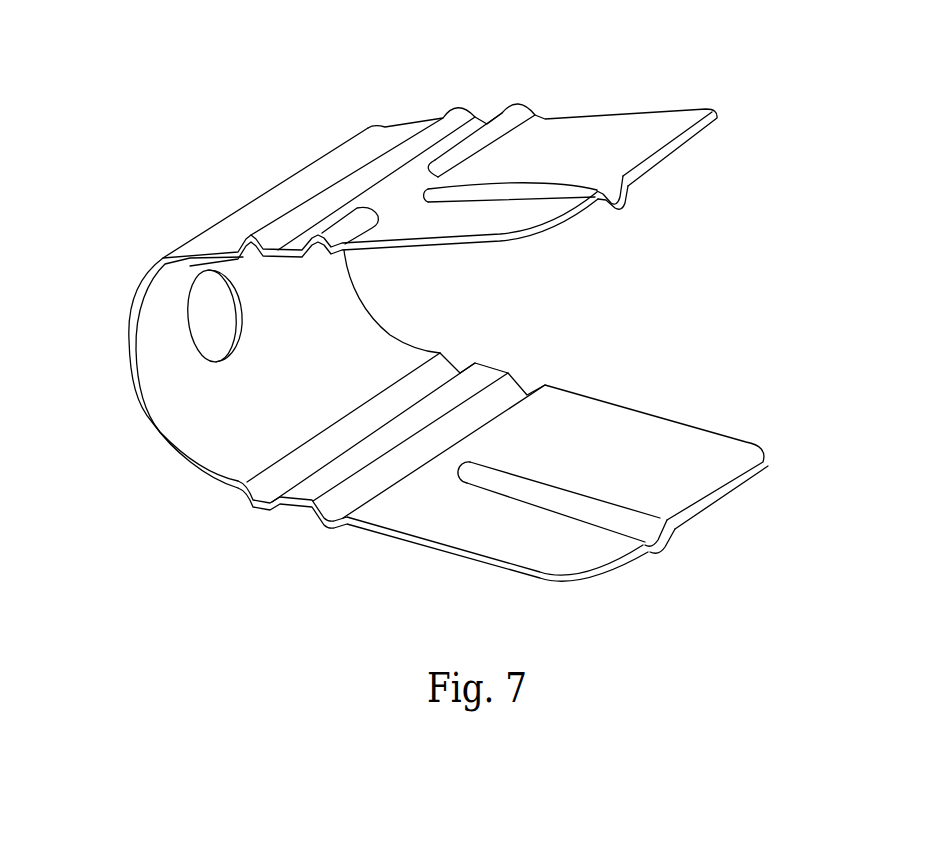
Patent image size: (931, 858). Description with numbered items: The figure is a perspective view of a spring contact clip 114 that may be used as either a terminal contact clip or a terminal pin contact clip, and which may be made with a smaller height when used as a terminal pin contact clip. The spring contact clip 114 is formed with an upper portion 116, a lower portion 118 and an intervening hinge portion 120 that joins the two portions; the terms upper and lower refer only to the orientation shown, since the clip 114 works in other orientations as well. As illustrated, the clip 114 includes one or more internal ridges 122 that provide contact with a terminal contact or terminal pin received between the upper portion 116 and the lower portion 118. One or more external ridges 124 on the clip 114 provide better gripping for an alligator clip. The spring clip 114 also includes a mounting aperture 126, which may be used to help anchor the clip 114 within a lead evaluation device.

The spring contact clip 114 is at (98, 183).
The upper portion 116 is at (697, 112).
The lower portion 118 is at (738, 449).
The hinge portion 120 is at (150, 313).
The internal ridges 122 is at (623, 205).
The external ridges 124 is at (508, 115).
The mounting aperture 126 is at (197, 333).